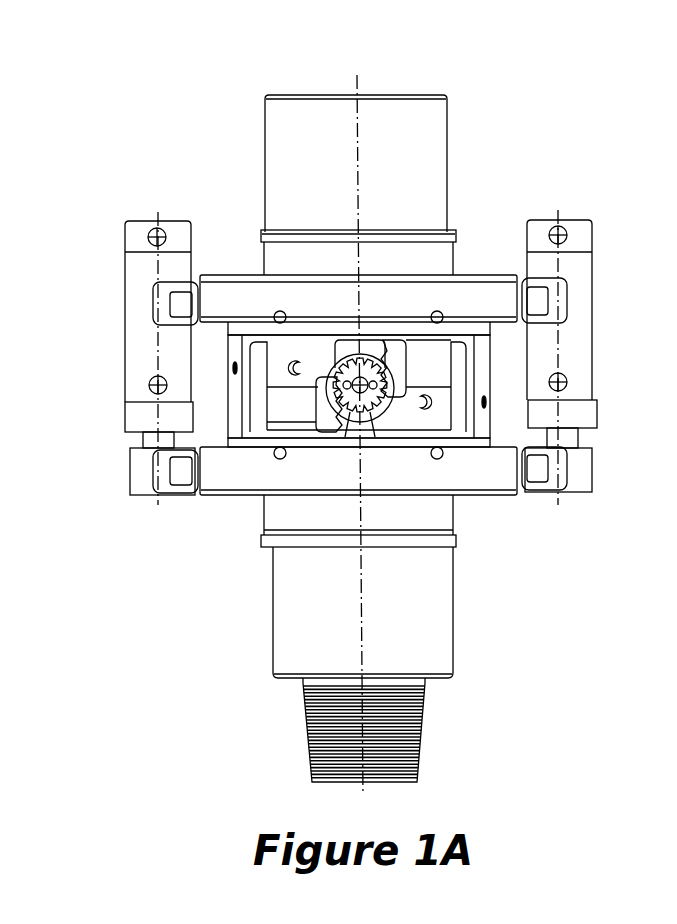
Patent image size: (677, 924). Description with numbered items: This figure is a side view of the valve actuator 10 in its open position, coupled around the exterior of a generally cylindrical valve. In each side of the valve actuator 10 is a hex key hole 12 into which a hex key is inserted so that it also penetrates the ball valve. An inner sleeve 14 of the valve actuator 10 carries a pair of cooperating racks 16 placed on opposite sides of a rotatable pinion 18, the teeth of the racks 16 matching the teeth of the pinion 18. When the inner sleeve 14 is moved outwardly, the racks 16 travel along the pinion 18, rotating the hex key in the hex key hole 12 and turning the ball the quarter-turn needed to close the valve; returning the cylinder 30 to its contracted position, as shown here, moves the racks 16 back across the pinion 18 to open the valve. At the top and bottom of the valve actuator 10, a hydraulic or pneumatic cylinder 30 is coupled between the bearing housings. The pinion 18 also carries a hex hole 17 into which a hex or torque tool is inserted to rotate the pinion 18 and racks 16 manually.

The valve actuator 10 is at (180, 106).
The hex key hole 12 is at (353, 403).
The inner sleeve 14 is at (288, 407).
The racks 16 is at (406, 364).
The hex hole 17 is at (371, 407).
The pinion 18 is at (366, 356).
The cylinder 30 is at (123, 325).